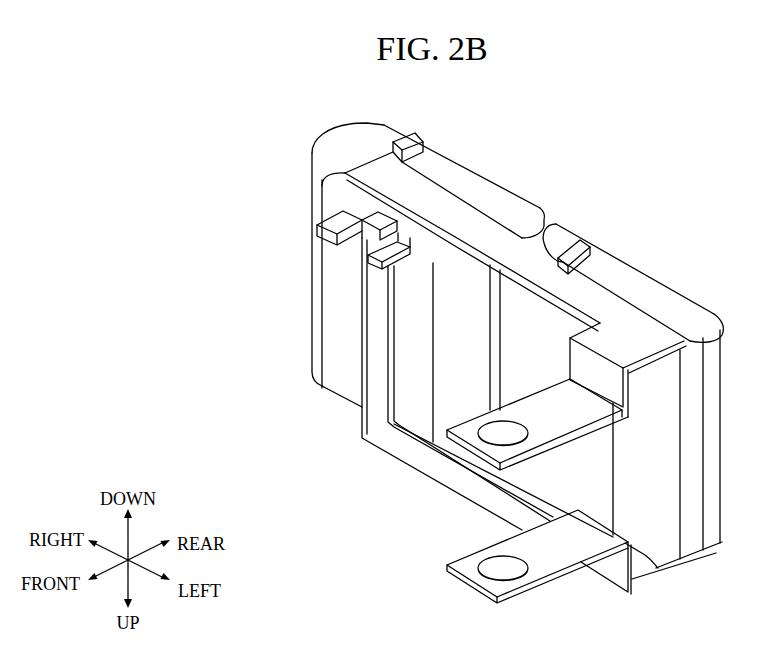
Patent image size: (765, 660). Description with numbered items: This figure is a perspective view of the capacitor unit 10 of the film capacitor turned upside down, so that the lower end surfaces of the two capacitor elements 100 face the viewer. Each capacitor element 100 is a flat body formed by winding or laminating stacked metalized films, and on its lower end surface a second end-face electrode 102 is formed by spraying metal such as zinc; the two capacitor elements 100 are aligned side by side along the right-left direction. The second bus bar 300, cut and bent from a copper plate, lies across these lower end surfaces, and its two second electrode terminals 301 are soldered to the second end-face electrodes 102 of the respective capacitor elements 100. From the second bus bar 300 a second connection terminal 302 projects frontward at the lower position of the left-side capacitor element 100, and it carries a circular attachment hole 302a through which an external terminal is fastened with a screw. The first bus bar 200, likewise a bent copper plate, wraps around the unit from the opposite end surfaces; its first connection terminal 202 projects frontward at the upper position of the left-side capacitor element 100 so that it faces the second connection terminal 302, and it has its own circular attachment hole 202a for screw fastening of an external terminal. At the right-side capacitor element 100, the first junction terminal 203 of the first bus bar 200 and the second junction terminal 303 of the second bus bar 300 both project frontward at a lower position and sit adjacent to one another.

The capacitor unit 10 is at (549, 197).
The capacitor element 100 is at (473, 161).
The second end-face electrode 102 is at (500, 198).
The first bus bar 200 is at (387, 467).
The first connection terminal 202 is at (573, 532).
The circular attachment hole 202a is at (483, 557).
The first junction terminal 203 is at (330, 217).
The second bus bar 300 is at (722, 300).
The second electrode terminal 301 is at (420, 142).
The second connection terminal 302 is at (549, 397).
The circular attachment hole 302a is at (500, 420).
The second junction terminal 303 is at (377, 267).